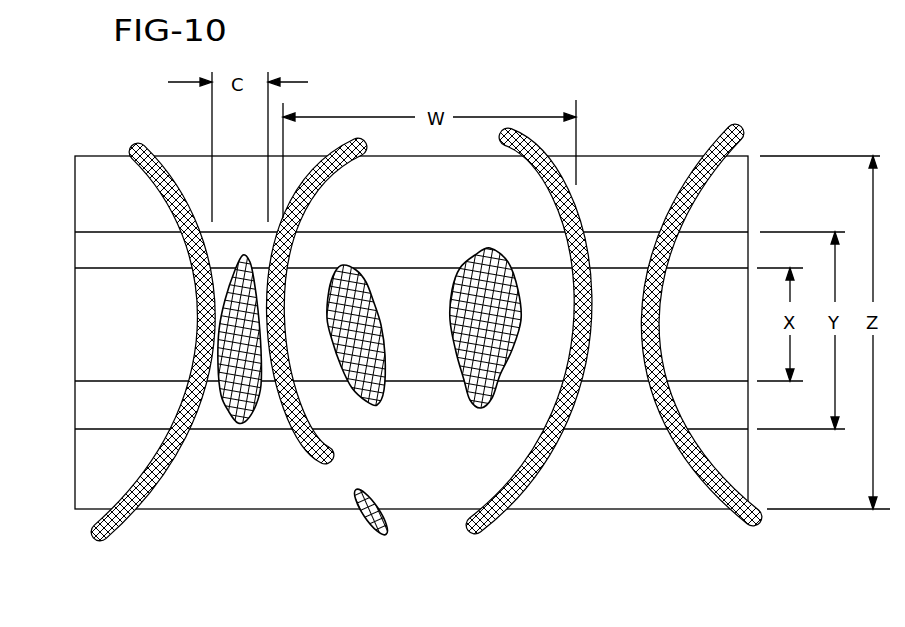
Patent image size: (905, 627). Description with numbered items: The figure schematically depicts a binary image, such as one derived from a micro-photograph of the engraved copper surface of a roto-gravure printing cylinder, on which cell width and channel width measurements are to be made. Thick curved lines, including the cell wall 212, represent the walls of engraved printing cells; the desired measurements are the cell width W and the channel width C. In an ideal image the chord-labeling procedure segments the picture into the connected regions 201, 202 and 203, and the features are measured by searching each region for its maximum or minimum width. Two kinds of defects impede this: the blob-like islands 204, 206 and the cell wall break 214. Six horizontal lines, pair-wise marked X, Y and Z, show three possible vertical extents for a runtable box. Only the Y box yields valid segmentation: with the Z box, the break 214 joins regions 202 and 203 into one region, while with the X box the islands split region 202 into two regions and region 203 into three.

The connected region 201 is at (148, 336).
The connected region 202 is at (268, 488).
The connected region 203 is at (458, 486).
The island 204 is at (472, 248).
The island 206 is at (348, 270).
The cell wall 212 is at (535, 140).
The cell wall break 214 is at (338, 478).